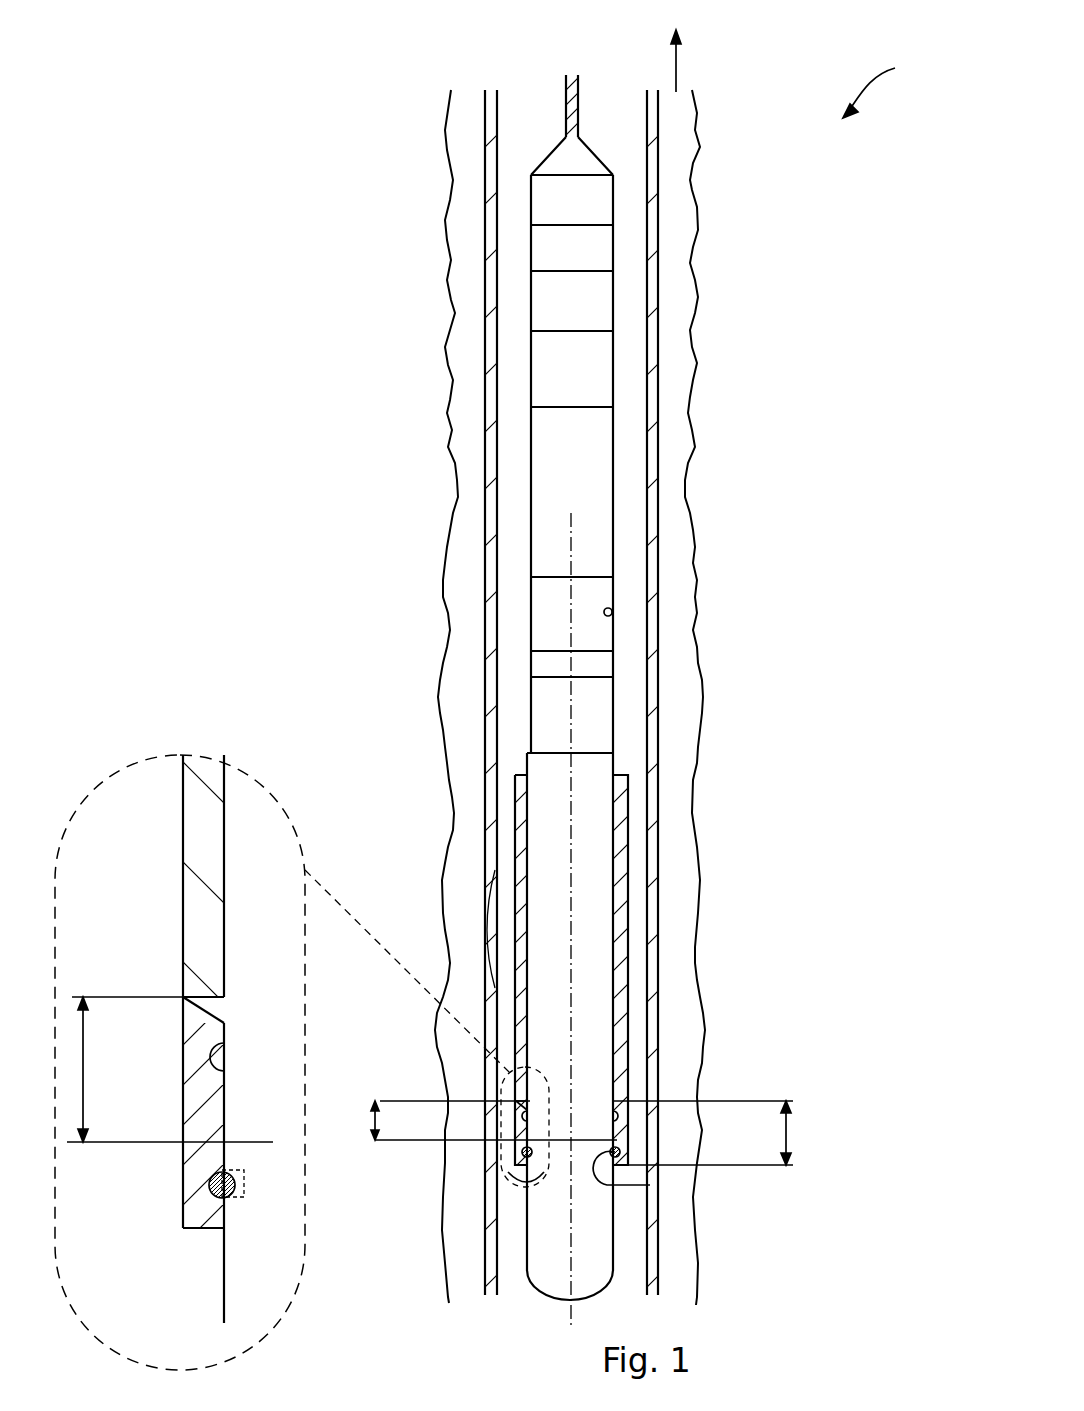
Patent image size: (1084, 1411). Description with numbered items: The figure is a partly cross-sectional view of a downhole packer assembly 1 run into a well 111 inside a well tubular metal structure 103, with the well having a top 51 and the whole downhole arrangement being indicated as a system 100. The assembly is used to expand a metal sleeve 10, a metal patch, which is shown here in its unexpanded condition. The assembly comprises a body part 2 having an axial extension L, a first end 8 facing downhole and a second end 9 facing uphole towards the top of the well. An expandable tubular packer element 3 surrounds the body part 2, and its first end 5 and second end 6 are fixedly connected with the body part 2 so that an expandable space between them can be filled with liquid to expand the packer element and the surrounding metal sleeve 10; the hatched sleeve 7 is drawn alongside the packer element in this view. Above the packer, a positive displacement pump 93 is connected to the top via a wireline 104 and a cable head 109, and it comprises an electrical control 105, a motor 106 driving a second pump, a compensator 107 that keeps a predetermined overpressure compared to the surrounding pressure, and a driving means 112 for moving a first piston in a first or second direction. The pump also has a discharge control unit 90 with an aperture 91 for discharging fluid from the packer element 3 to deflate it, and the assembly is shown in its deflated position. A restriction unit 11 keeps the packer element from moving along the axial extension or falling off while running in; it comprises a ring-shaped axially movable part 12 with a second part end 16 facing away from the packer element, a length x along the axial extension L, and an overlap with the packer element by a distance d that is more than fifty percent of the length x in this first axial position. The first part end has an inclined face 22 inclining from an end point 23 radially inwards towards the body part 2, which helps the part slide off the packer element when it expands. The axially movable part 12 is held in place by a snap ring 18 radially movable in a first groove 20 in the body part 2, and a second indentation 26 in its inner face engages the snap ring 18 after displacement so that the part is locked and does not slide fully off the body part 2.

The downhole system 100 is at (898, 86).
The top 51 is at (679, 48).
The well tubular metal structure 103 is at (482, 98).
The wireline 104 is at (580, 103).
The well 111 is at (470, 135).
The cable head 109 is at (590, 168).
The electrical control 105 is at (596, 198).
The motor 106 is at (598, 240).
The compensator 107 is at (590, 288).
The driving means 112 is at (584, 357).
The positive displacement pump 93 is at (594, 472).
The discharge control unit 90 is at (598, 584).
The aperture 91 is at (612, 614).
The second end 9 is at (548, 690).
The second end 6 is at (608, 765).
The downhole packer assembly 1 is at (598, 825).
The expandable sleeve 7 is at (557, 858).
The metal sleeve 10 is at (606, 868).
The expandable tubular packer element 3 is at (585, 998).
The first end 5 is at (593, 1110).
The inclined face 22 is at (522, 1102).
The end point 23 is at (522, 1106).
The second indentation 26 is at (627, 1118).
The axially movable part 12 is at (513, 1145).
The snap ring 18 is at (628, 1160).
The second part end 16 is at (510, 1170).
The first groove 20 is at (650, 1185).
The restriction unit 11 is at (628, 1145).
The body part 2 is at (540, 1202).
The first end 8 is at (538, 1263).
The axial extension L is at (572, 1253).
The distance d is at (337, 1070).
The length x is at (711, 1133).